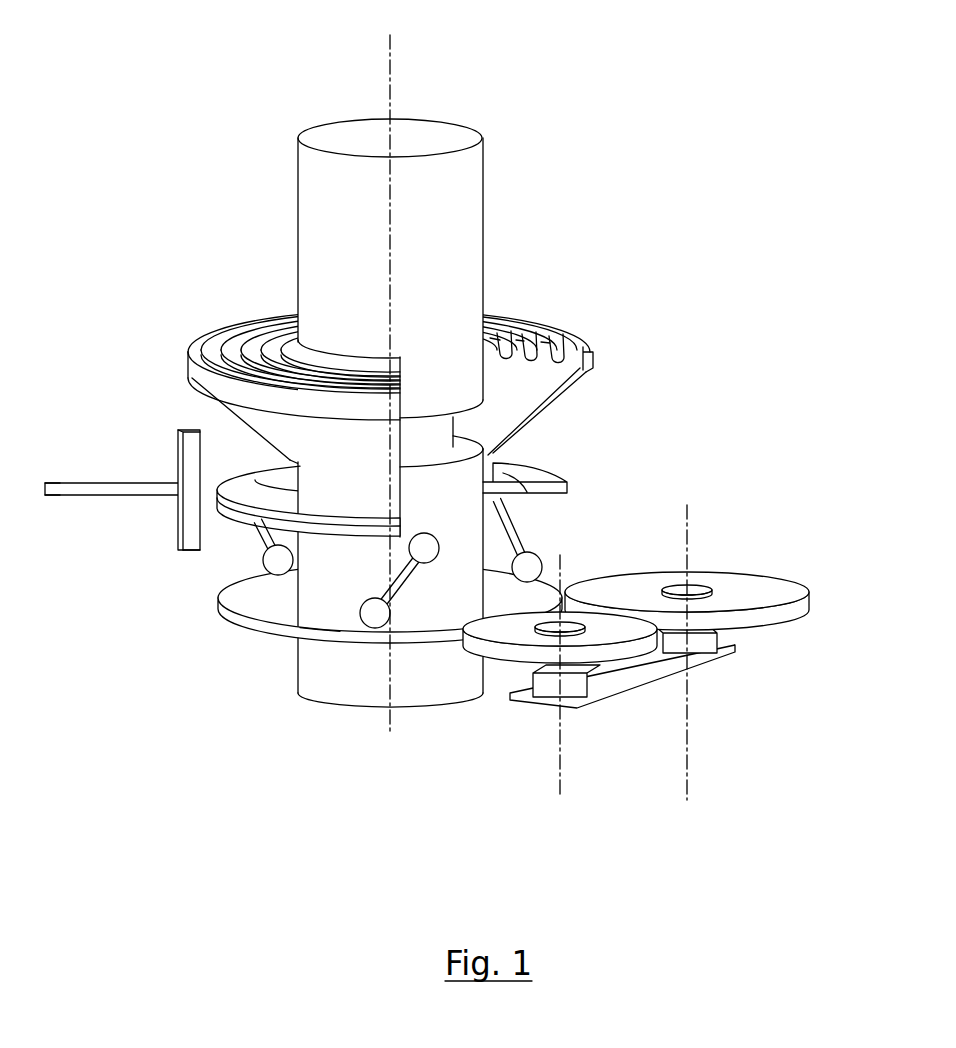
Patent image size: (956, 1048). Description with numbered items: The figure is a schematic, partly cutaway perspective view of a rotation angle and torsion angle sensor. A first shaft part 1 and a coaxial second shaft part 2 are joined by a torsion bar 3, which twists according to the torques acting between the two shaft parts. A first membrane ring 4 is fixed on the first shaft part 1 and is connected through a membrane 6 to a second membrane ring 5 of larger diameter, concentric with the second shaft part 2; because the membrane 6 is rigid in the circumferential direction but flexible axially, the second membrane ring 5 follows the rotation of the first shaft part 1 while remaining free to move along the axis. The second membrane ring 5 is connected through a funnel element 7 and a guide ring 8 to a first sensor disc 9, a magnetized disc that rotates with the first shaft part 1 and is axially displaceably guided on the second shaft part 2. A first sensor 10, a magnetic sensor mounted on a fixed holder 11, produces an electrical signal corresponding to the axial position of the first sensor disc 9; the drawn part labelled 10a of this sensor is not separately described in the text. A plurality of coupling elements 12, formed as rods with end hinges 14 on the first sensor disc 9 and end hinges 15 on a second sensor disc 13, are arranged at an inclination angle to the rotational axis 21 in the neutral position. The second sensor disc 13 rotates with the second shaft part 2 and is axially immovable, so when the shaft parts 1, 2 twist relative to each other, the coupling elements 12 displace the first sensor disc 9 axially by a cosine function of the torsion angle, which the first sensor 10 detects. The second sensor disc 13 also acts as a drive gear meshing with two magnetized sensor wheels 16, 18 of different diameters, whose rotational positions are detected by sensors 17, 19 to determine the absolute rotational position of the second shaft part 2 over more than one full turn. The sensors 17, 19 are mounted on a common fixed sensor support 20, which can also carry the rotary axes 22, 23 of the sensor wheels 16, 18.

The first shaft part 1 is at (327, 182).
The second shaft part 2 is at (330, 687).
The torsion bar 3 is at (433, 437).
The first membrane ring 4 is at (513, 323).
The second membrane ring 5 is at (592, 351).
The membrane 6 is at (553, 326).
The funnel element 7 is at (583, 377).
The guide ring 8 is at (300, 497).
The first sensor disc 9 is at (250, 477).
The first sensor 10 is at (177, 442).
The lever end plate 10a is at (180, 533).
The fixed holder 11 is at (47, 483).
The coupling elements 12 is at (523, 520).
The second sensor disc 13 is at (390, 583).
The hinges 14 is at (436, 553).
The hinges 15 is at (300, 645).
The sensor wheel 16 is at (470, 646).
The sensor 17 is at (577, 687).
The sensor wheel 18 is at (810, 590).
The sensor 19 is at (707, 647).
The common fixed sensor support 20 is at (650, 683).
The rotational axis 21 is at (390, 53).
The rotary axis 22 is at (560, 768).
The rotary axis 23 is at (687, 505).